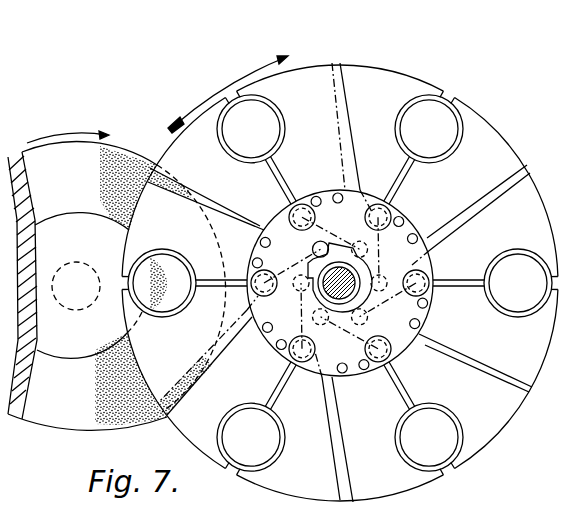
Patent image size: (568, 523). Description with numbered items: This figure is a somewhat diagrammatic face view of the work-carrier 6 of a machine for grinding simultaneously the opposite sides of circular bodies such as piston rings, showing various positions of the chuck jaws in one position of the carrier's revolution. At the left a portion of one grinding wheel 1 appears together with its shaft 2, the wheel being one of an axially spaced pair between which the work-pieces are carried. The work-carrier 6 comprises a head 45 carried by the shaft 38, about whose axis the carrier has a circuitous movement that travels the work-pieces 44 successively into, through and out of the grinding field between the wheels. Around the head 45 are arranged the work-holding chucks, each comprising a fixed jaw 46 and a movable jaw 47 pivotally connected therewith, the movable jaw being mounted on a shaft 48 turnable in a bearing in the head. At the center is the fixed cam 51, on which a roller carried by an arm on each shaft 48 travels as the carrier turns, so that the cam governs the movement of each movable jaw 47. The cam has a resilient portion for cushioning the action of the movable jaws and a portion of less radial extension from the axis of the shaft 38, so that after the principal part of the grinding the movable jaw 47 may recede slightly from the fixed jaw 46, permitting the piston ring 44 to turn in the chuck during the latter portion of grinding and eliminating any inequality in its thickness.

The grinding wheel 1 is at (100, 179).
The shaft 2 is at (88, 310).
The work-carrier 6 is at (340, 283).
The shaft 38 is at (339, 283).
The piston ring 44 is at (276, 116).
The head 45 is at (394, 250).
The fixed jaw 46 is at (354, 272).
The movable jaw 47 is at (340, 282).
The shaft 48 is at (268, 304).
The fixed cam 51 is at (340, 277).